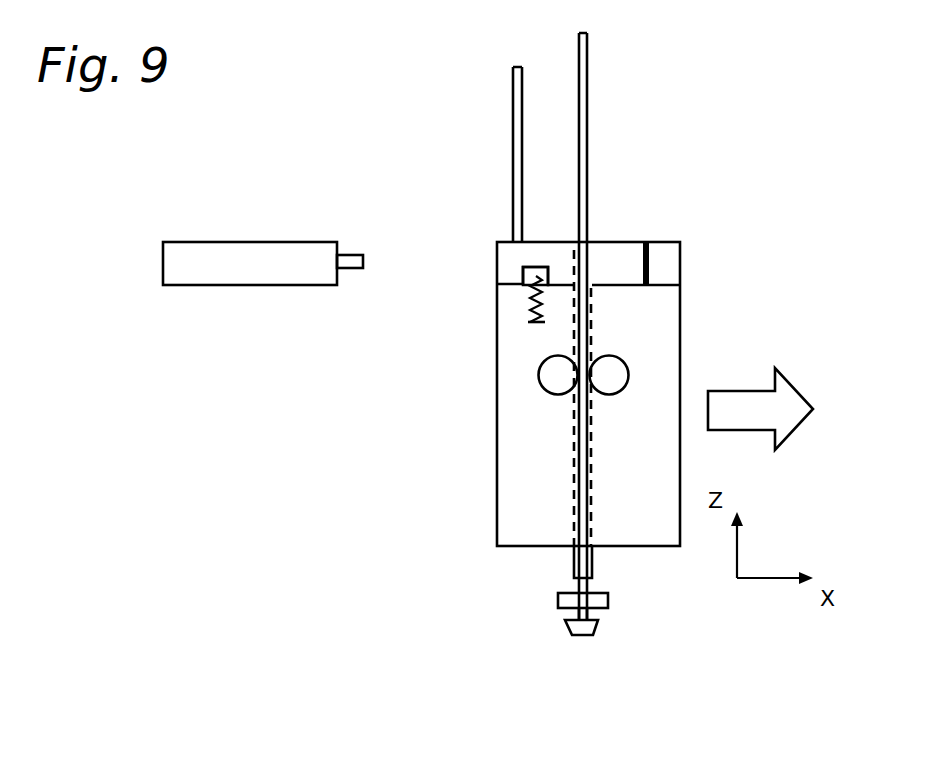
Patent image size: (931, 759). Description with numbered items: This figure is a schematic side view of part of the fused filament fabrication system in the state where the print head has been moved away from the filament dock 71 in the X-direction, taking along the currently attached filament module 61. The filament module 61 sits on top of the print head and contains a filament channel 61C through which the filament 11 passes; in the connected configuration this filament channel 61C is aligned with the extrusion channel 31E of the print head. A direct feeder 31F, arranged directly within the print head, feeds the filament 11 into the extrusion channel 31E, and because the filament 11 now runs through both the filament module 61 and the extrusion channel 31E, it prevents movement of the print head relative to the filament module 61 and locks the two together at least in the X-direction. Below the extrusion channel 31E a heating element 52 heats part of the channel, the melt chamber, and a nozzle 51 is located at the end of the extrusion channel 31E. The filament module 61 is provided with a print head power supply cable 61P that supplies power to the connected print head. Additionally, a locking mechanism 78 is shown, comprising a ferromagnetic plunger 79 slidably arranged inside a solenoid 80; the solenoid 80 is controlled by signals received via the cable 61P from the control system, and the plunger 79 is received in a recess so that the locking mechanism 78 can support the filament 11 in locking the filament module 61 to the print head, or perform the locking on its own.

The filament 11 is at (588, 93).
The filament module 61 is at (610, 247).
The print head power supply cable 61P is at (515, 105).
The filament channel 61C is at (592, 270).
The extrusion channel 31E is at (572, 444).
The direct feeder 31F is at (540, 378).
The ferromagnetic plunger 79 is at (522, 278).
The locking mechanism 78 is at (511, 298).
The solenoid 80 is at (530, 323).
The heating element 52 is at (559, 600).
The nozzle 51 is at (597, 629).
The filament dock 71 is at (197, 284).